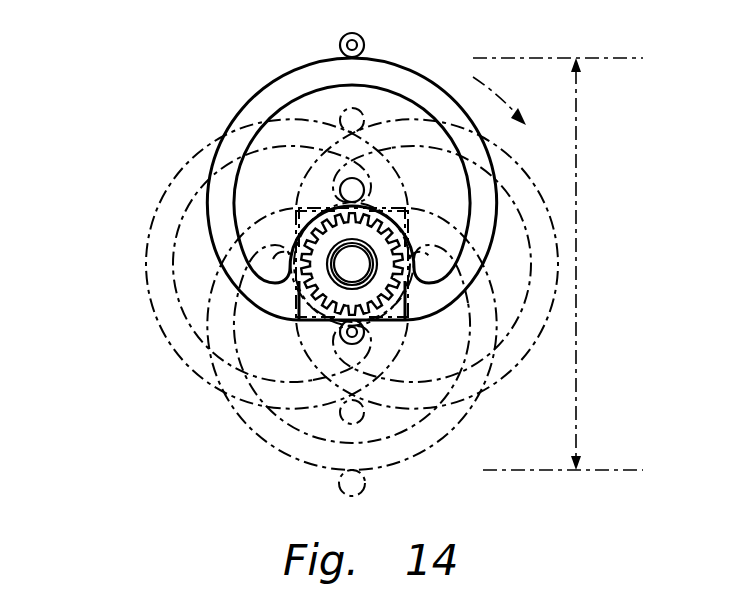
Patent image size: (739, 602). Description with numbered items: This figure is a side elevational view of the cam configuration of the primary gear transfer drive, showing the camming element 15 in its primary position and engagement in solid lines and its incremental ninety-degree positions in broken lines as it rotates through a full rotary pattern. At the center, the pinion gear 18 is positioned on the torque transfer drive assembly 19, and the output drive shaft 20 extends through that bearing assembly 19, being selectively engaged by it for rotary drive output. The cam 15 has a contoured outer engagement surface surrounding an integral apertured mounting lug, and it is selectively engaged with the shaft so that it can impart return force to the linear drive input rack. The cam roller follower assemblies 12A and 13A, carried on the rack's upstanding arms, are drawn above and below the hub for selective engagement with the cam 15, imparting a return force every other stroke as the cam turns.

The cam roller follower assembly 12A is at (340, 44).
The cam roller follower assembly 13A is at (345, 334).
The camming element 15 is at (401, 79).
The pinion gear 18 is at (329, 288).
The torque transfer drive assembly 19 is at (328, 272).
The output drive shaft 20 is at (352, 263).